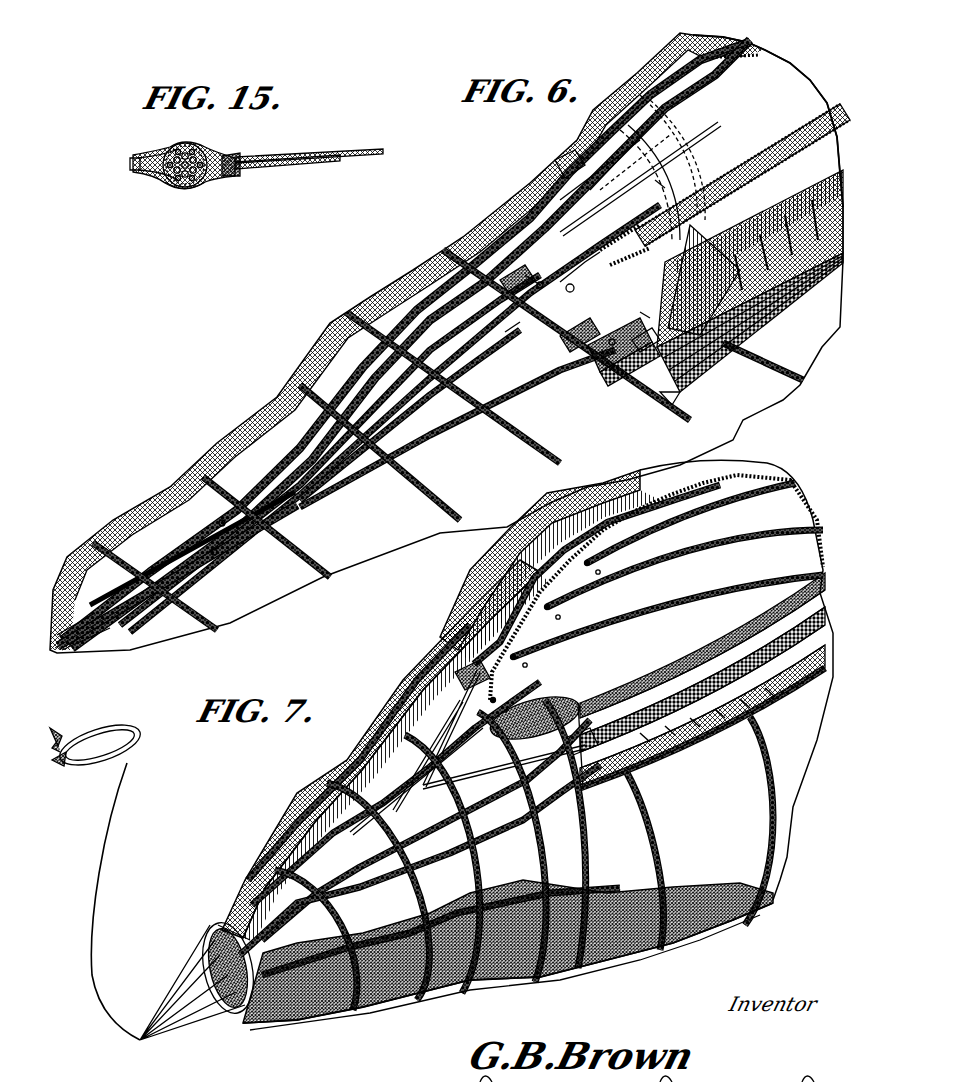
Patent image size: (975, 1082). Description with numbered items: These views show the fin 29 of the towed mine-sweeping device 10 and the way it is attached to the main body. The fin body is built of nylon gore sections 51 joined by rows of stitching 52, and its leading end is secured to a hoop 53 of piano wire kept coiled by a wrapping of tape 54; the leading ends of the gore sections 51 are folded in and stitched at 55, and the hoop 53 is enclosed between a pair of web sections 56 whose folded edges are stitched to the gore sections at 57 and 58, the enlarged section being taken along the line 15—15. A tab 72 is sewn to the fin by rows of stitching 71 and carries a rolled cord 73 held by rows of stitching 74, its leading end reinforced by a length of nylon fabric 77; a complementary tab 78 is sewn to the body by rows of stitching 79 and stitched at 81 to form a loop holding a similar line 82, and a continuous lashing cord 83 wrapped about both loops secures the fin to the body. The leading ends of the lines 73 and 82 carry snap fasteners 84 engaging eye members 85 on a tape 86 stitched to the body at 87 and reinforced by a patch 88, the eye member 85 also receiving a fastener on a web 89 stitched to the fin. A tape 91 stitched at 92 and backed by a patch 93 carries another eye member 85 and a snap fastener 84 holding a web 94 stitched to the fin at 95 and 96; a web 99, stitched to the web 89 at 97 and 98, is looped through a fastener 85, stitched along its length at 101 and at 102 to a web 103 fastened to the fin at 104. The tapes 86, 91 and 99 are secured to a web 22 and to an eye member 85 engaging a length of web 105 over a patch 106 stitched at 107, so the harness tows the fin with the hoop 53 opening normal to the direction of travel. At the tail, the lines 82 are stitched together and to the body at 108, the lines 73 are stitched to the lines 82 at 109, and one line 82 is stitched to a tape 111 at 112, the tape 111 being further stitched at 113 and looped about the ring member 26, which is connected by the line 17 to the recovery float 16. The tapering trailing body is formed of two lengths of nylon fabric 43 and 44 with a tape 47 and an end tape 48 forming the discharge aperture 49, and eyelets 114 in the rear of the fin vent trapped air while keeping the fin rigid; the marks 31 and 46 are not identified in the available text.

In FIG. 6, the device 10 is at (402, 257).
In FIG. 6, the line 15 is at (702, 162).
In FIG. 7, the float 16 is at (143, 743).
In FIG. 7, the line 17 is at (98, 924).
In FIG. 6, the web 22 is at (74, 650).
In FIG. 7, the web 22 is at (393, 743).
In FIG. 7, the ring member 26 is at (205, 940).
In FIG. 6, the fin 29 is at (657, 50).
In FIG. 7, the fin 29 is at (776, 458).
In FIG. 6, the transverse rib 31 is at (500, 460).
In FIG. 7, the transverse rib 31 is at (740, 821).
In FIG. 7, the length of nylon fabric material 43 is at (385, 987).
In FIG. 7, the length of nylon fabric material 44 is at (294, 1012).
In FIG. 7, the upper edge band 46 is at (330, 776).
In FIG. 7, the tape 47 is at (272, 867).
In FIG. 7, the tape 48 is at (235, 930).
In FIG. 7, the aperture 49 is at (205, 1005).
In FIG. 15, the gore sections 51 is at (362, 150).
In FIG. 6, the gore sections 51 is at (727, 38).
In FIG. 6, the rows of stitching 52 is at (757, 42).
In FIG. 15, the hoop 53 is at (195, 150).
In FIG. 15, the tape 54 is at (165, 180).
In FIG. 15, the stitching 55 is at (333, 155).
In FIG. 6, the stitching 55 is at (700, 152).
In FIG. 15, the web sections 56 is at (135, 168).
In FIG. 15, the stitching 57 is at (143, 158).
In FIG. 6, the stitching 57 is at (658, 186).
In FIG. 15, the stitching 58 is at (235, 160).
In FIG. 6, the stitching 58 is at (665, 140).
In FIG. 6, the rows of stitching 71 is at (789, 212).
In FIG. 7, the rows of stitching 71 is at (700, 660).
In FIG. 6, the tab 72 is at (815, 197).
In FIG. 7, the tab 72 is at (630, 700).
In FIG. 6, the cord 73 is at (640, 345).
In FIG. 7, the cord 73 is at (560, 720).
In FIG. 7, the rows of stitching 74 is at (740, 636).
In FIG. 6, the nylon fabric 77 is at (735, 250).
In FIG. 6, the complementary tab 78 is at (797, 285).
In FIG. 7, the complementary tab 78 is at (515, 576).
In FIG. 6, the rows of stitching 79 is at (808, 268).
In FIG. 7, the rows of stitching 79 is at (556, 531).
In FIG. 6, the stitching 81 is at (630, 382).
In FIG. 7, the stitching 81 is at (706, 720).
In FIG. 6, the line 82 is at (612, 372).
In FIG. 7, the line 82 is at (470, 668).
In FIG. 6, the cord 83 is at (790, 300).
In FIG. 7, the cord 83 is at (619, 502).
In FIG. 6, the snap fastener 84 is at (578, 291).
In FIG. 6, the eye member 85 is at (553, 283).
In FIG. 6, the tape 86 is at (462, 312).
In FIG. 6, the rows of stitching 87 is at (432, 437).
In FIG. 6, the patch 88 is at (507, 291).
In FIG. 6, the web 89 is at (538, 266).
In FIG. 6, the tape 91 is at (479, 354).
In FIG. 6, the stitching 92 is at (432, 389).
In FIG. 6, the patch 93 is at (517, 328).
In FIG. 6, the web 94 is at (576, 270).
In FIG. 6, the stitching 95 is at (632, 235).
In FIG. 6, the stitching 96 is at (655, 257).
In FIG. 6, the stitching 97 is at (640, 84).
In FIG. 6, the stitching 98 is at (683, 86).
In FIG. 6, the web 99 is at (560, 165).
In FIG. 6, the stitching 101 is at (346, 395).
In FIG. 6, the stitching 102 is at (437, 307).
In FIG. 6, the web 103 is at (620, 172).
In FIG. 6, the stitching 104 is at (720, 119).
In FIG. 6, the web 105 is at (172, 556).
In FIG. 6, the patch 106 is at (300, 501).
In FIG. 6, the stitching 107 is at (87, 616).
In FIG. 7, the stitching 108 is at (400, 792).
In FIG. 7, the stitching 109 is at (505, 756).
In FIG. 7, the tape 111 is at (348, 862).
In FIG. 7, the stitching 112 is at (375, 821).
In FIG. 7, the rows of stitching 113 is at (283, 912).
In FIG. 7, the eyelets 114 is at (600, 563).